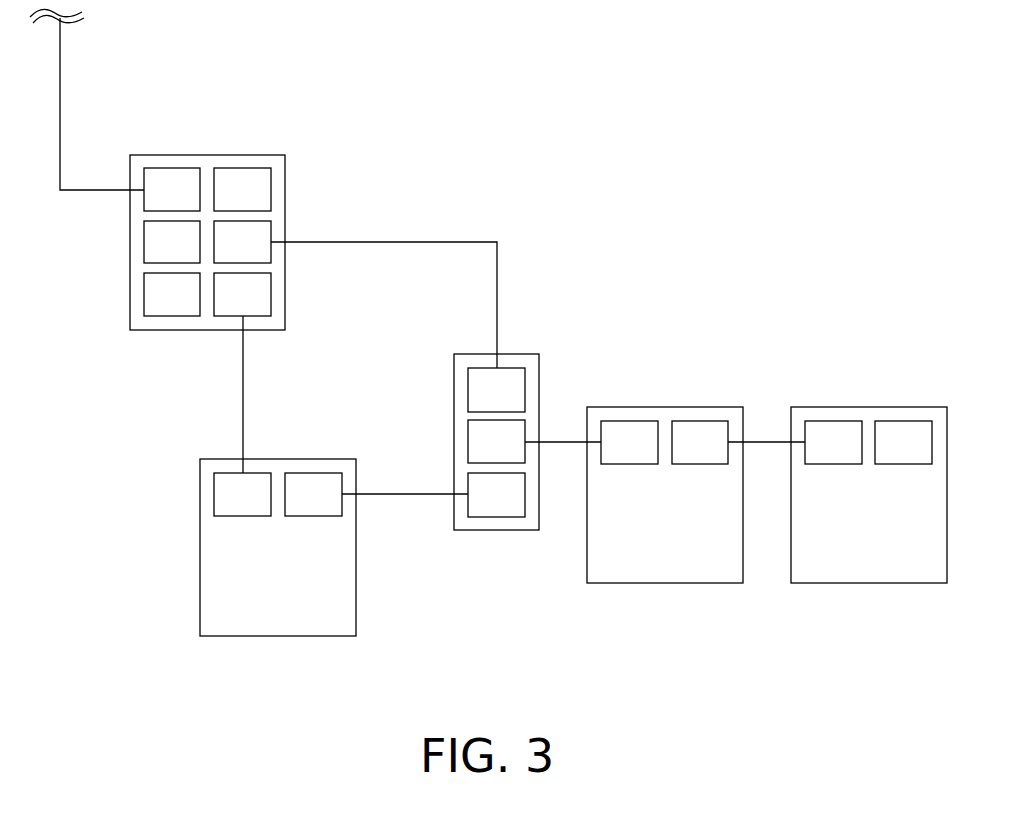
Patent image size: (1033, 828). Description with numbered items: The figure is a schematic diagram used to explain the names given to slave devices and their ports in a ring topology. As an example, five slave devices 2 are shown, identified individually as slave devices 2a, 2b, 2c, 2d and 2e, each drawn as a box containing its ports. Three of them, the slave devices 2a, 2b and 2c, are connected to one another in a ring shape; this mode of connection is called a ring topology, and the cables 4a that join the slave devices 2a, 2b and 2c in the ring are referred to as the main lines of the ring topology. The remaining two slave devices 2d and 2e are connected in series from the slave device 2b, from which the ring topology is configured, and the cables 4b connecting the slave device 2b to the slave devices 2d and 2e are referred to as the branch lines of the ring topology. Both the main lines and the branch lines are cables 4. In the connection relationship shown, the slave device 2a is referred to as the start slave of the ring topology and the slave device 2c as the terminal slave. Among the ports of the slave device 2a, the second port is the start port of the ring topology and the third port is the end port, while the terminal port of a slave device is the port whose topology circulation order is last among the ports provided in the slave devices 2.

The slave device 2 is at (244, 219).
The slave device 2a is at (267, 155).
The slave device 2b is at (520, 354).
The slave device 2c is at (337, 459).
The slave device 2d is at (645, 583).
The slave device 2e is at (850, 583).
The cable 4 is at (60, 110).
The cable 4a is at (393, 242).
The cable 4b is at (558, 442).